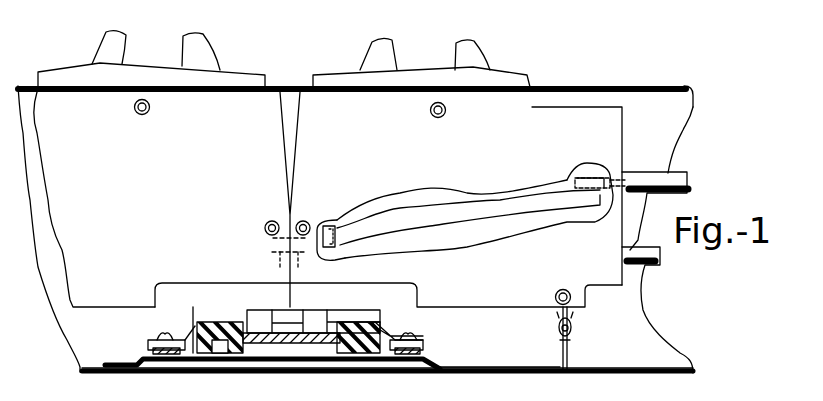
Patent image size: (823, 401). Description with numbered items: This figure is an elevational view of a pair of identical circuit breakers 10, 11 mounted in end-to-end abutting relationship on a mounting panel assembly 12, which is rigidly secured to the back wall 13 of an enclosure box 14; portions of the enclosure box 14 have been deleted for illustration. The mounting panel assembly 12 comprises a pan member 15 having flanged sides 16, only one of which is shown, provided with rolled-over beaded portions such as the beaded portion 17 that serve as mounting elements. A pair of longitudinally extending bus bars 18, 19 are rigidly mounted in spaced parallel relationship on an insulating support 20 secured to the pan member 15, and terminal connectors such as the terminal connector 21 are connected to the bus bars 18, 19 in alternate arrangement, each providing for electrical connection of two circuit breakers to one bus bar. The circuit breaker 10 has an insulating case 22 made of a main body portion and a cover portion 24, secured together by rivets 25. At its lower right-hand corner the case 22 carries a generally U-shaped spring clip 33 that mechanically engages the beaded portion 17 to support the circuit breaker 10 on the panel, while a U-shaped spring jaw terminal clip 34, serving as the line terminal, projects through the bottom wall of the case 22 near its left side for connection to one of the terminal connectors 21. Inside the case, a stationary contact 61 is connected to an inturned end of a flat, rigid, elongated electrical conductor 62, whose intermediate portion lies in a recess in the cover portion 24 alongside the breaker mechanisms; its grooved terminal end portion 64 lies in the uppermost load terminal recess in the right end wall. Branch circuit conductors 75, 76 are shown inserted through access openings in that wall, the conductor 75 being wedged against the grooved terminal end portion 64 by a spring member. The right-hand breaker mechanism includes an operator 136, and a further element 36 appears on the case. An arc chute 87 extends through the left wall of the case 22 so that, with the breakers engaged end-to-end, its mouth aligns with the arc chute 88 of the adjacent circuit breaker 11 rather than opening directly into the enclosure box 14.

The circuit breaker 10 is at (322, 70).
The circuit breaker 11 is at (248, 70).
The mounting panel assembly 12 is at (453, 350).
The back wall 13 is at (532, 377).
The enclosure box 14 is at (587, 377).
The pan member 15 is at (473, 362).
The flanged side 16 is at (560, 345).
The beaded portion 17 is at (568, 342).
The bus bar 18 is at (147, 343).
The bus bar 19 is at (427, 350).
The insulating support 20 is at (350, 357).
The terminal connector 21 is at (392, 325).
The insulating case 22 is at (625, 134).
The cover portion 24 is at (542, 105).
The rivet 25 is at (448, 110).
The spring clip 33 is at (580, 323).
The spring jaw terminal clip 34 is at (317, 353).
The key 36 is at (385, 50).
The operator 136 is at (466, 45).
The stationary contact 61 is at (333, 217).
The electrical conductor 62 is at (438, 217).
The grooved terminal end portion 64 is at (585, 180).
The branch circuit conductor 75 is at (670, 178).
The branch circuit conductor 76 is at (652, 265).
The arc chute 87 is at (298, 260).
The arc chute 88 is at (278, 260).